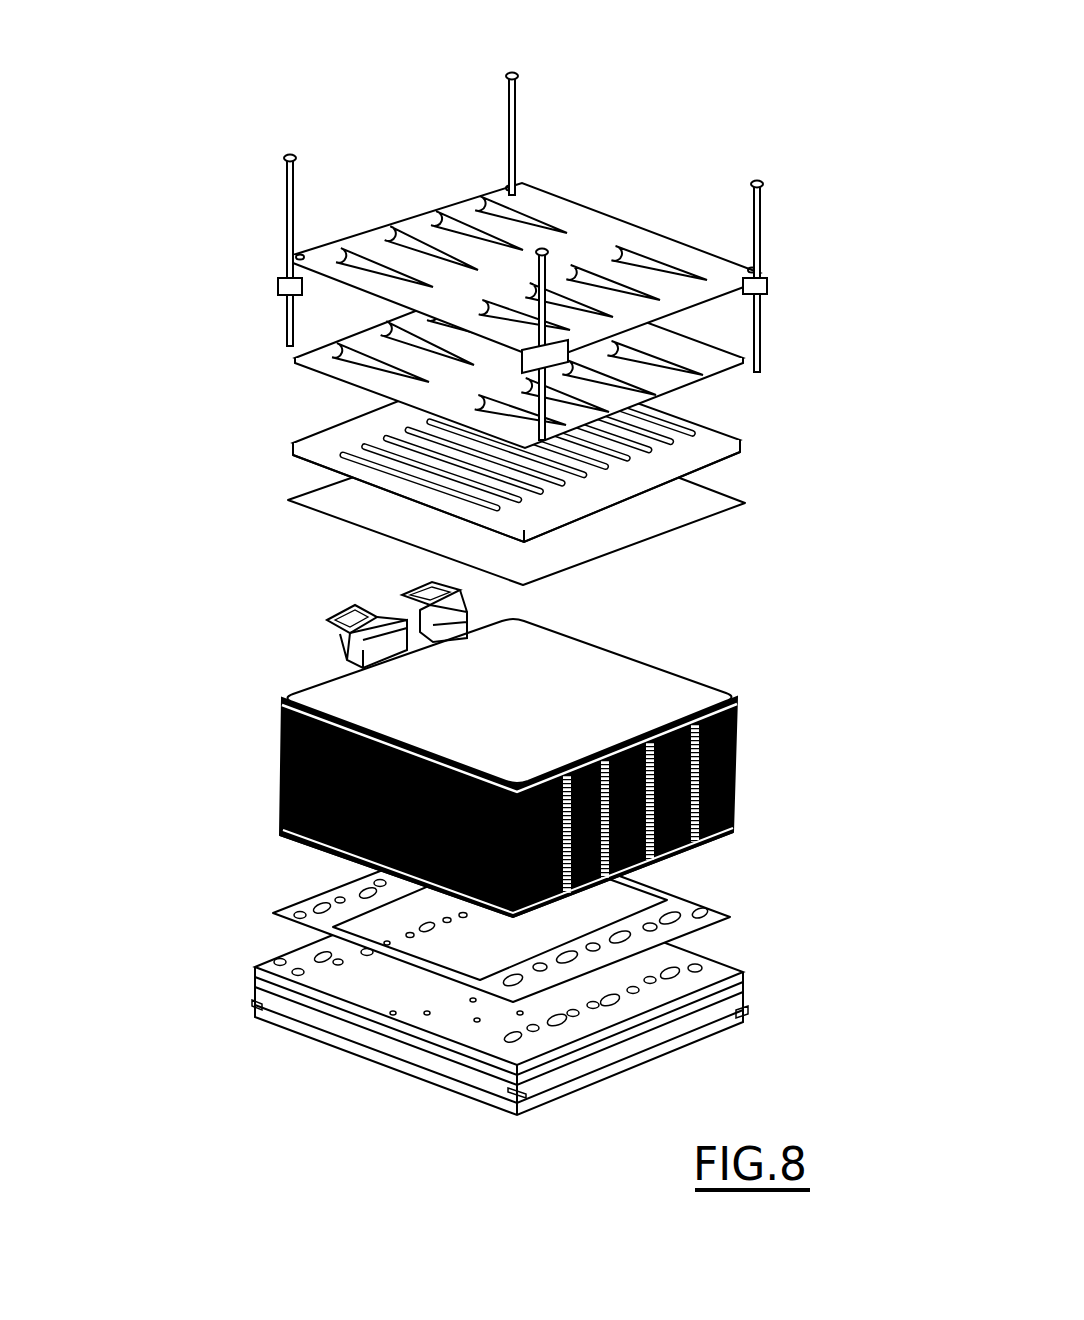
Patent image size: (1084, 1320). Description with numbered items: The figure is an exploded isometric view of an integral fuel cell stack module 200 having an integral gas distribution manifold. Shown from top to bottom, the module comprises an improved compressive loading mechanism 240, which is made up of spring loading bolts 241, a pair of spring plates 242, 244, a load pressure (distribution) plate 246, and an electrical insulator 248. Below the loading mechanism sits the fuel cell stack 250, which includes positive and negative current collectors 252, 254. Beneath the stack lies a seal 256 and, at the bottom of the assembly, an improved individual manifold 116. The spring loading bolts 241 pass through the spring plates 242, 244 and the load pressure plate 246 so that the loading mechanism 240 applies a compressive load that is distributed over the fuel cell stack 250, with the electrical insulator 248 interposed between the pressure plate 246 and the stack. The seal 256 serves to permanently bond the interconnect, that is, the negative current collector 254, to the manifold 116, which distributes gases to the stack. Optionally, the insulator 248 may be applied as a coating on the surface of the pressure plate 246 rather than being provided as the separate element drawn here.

The integral fuel cell stack module 200 is at (795, 132).
The compressive loading mechanism 240 is at (237, 94).
The spring loading bolts 241 is at (280, 216).
The spring plate 242 is at (645, 240).
The spring plate 244 is at (633, 365).
The load pressure plate 246 is at (700, 443).
The electrical insulator 248 is at (675, 520).
The fuel cell stack 250 is at (740, 742).
The positive current collector 252 is at (463, 641).
The negative current collector 254 is at (313, 847).
The seal 256 is at (683, 900).
The individual manifold 116 is at (723, 970).